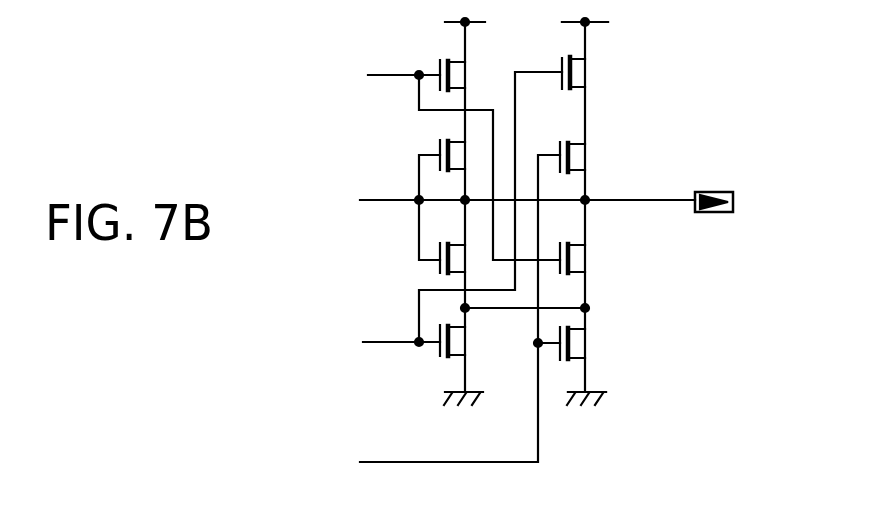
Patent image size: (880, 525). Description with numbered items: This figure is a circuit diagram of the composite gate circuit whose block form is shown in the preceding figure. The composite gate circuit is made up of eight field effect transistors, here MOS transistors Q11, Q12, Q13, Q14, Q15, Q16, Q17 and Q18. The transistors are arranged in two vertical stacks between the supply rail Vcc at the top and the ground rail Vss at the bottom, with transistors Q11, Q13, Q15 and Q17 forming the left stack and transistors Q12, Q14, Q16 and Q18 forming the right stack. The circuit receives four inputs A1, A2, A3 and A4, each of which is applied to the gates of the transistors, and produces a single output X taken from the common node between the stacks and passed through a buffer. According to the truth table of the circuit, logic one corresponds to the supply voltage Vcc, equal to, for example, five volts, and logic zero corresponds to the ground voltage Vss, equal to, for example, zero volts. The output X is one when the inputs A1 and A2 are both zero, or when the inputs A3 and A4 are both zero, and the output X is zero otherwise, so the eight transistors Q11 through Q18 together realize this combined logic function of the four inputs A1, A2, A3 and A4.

The MOS transistor Q11 is at (432, 56).
The MOS transistor Q12 is at (603, 67).
The MOS transistor Q13 is at (420, 146).
The MOS transistor Q14 is at (605, 147).
The MOS transistor Q15 is at (412, 257).
The MOS transistor Q16 is at (602, 258).
The MOS transistor Q17 is at (435, 358).
The MOS transistor Q18 is at (600, 343).
The input A1 is at (442, 315).
The input A2 is at (443, 213).
The input A3 is at (508, 207).
The input A4 is at (445, 159).
The output X is at (729, 202).
The supply voltage Vcc is at (662, 24).
The ground voltage Vss is at (670, 399).